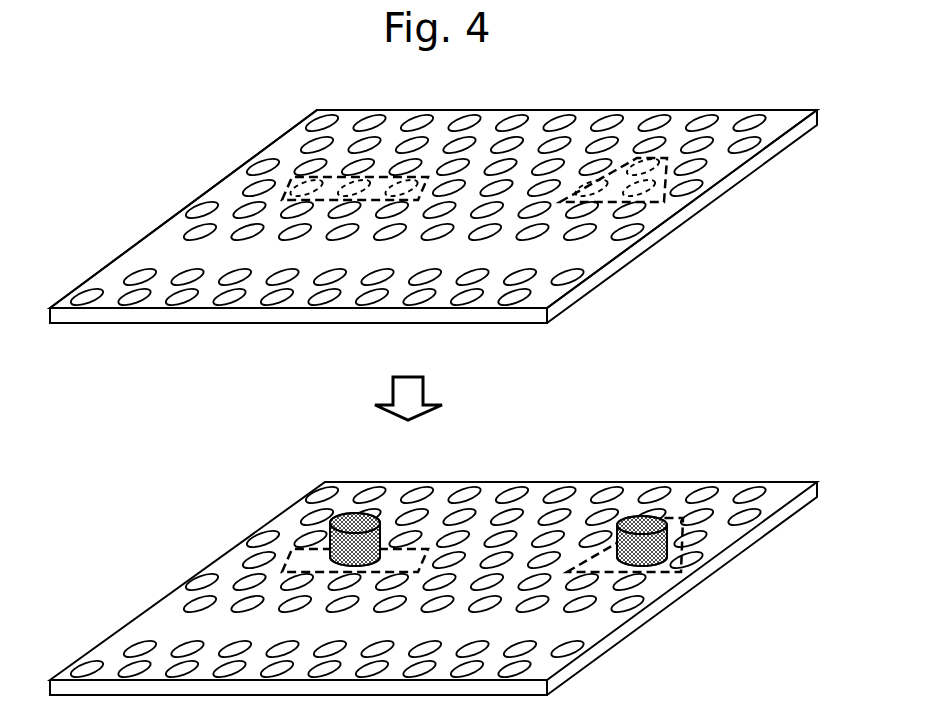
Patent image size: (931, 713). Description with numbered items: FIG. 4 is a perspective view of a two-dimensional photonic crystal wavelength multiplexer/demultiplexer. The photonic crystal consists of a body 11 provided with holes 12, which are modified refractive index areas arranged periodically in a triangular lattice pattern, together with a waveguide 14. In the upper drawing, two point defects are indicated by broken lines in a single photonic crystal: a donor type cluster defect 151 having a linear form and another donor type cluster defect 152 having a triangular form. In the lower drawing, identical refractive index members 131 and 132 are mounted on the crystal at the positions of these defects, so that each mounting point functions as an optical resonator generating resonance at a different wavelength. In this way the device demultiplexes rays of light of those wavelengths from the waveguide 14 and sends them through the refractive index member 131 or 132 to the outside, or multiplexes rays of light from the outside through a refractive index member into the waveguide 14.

The body 11 is at (307, 125).
The holes 12 is at (203, 210).
The waveguide 14 is at (187, 253).
The donor type cluster defect having a linear form 151 is at (280, 187).
The donor type cluster defect having a triangular form 152 is at (620, 170).
The refractive index member 131 is at (343, 517).
The refractive index member 132 is at (647, 527).